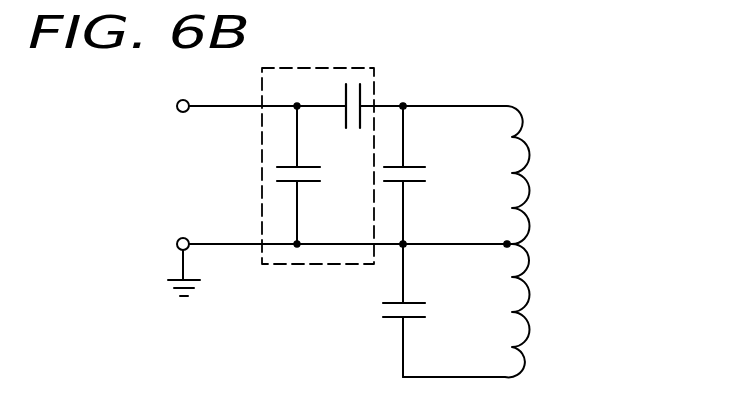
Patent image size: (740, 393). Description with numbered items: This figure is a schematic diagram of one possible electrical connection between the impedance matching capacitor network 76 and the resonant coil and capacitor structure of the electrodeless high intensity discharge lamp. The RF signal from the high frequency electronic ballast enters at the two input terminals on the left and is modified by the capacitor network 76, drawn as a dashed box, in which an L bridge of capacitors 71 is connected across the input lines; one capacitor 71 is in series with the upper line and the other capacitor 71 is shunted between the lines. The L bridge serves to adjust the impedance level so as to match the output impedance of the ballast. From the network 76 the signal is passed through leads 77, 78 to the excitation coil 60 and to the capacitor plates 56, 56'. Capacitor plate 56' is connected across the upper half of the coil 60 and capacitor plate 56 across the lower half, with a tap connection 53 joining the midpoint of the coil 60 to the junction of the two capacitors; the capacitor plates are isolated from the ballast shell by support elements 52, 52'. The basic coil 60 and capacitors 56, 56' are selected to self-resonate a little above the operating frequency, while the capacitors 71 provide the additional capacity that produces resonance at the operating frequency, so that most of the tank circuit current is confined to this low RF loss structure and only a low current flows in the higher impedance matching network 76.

The support element 52 is at (466, 310).
The support element 52' is at (497, 150).
The tap connection 53 is at (470, 243).
The capacitor plate 56 is at (423, 310).
The capacitor plate 56' is at (429, 175).
The excitation coil 60 is at (503, 216).
The capacitors 71 is at (345, 115).
The capacitor network 76 is at (332, 266).
The lead 77 is at (392, 247).
The lead 78 is at (388, 104).